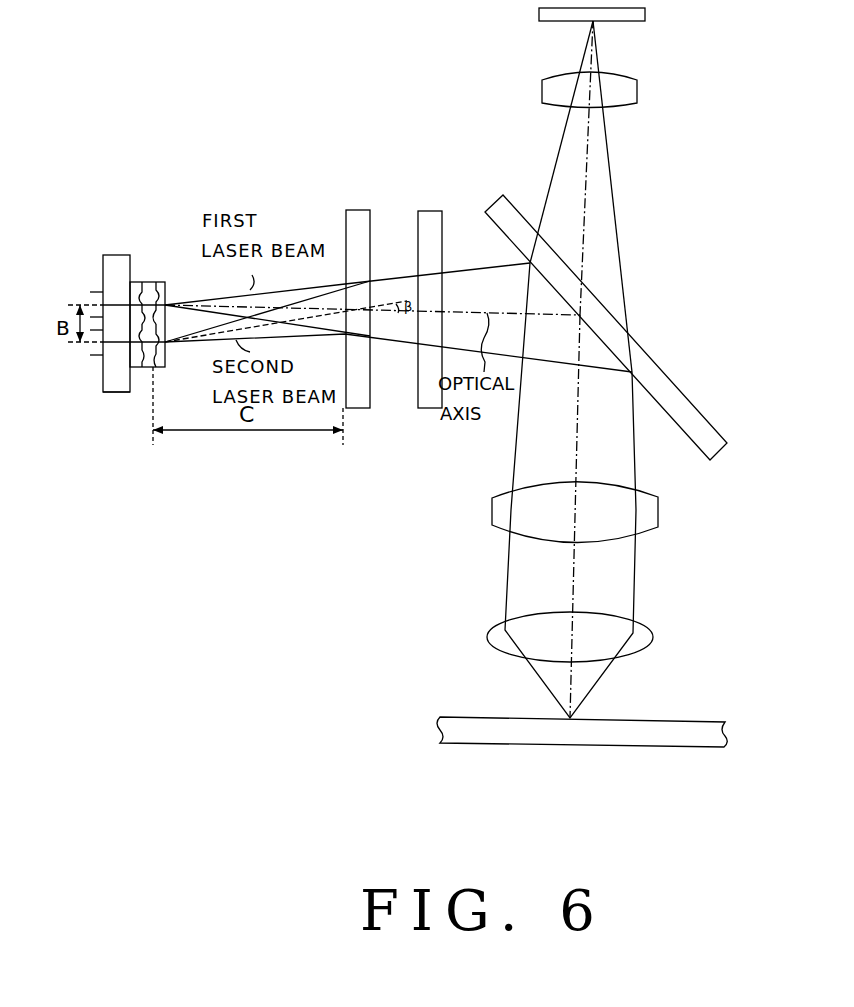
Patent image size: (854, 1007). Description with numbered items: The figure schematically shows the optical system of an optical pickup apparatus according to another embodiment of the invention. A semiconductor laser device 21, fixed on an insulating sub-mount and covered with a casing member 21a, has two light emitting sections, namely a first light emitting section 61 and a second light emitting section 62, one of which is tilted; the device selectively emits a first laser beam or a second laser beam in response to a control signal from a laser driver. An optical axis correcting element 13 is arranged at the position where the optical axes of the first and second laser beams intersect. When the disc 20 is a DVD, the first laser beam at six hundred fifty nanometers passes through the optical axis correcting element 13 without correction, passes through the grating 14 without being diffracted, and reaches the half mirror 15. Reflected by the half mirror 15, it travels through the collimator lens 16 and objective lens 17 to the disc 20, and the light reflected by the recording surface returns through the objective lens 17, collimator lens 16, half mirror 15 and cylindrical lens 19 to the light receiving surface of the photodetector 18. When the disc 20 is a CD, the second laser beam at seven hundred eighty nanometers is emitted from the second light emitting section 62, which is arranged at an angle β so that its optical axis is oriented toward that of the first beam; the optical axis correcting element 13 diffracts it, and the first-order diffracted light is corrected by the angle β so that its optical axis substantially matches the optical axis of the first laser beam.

The optical axis correcting element 13 is at (368, 210).
The grating 14 is at (430, 211).
The half mirror 15 is at (704, 417).
The collimator lens 16 is at (658, 511).
The objective lens 17 is at (653, 632).
The photodetector 18 is at (645, 14).
The cylindrical lens 19 is at (637, 95).
The disc 20 is at (708, 720).
The semiconductor laser device 21 is at (95, 268).
The casing member 21a is at (115, 392).
The first light emitting section 61 is at (151, 283).
The second light emitting section 62 is at (158, 352).